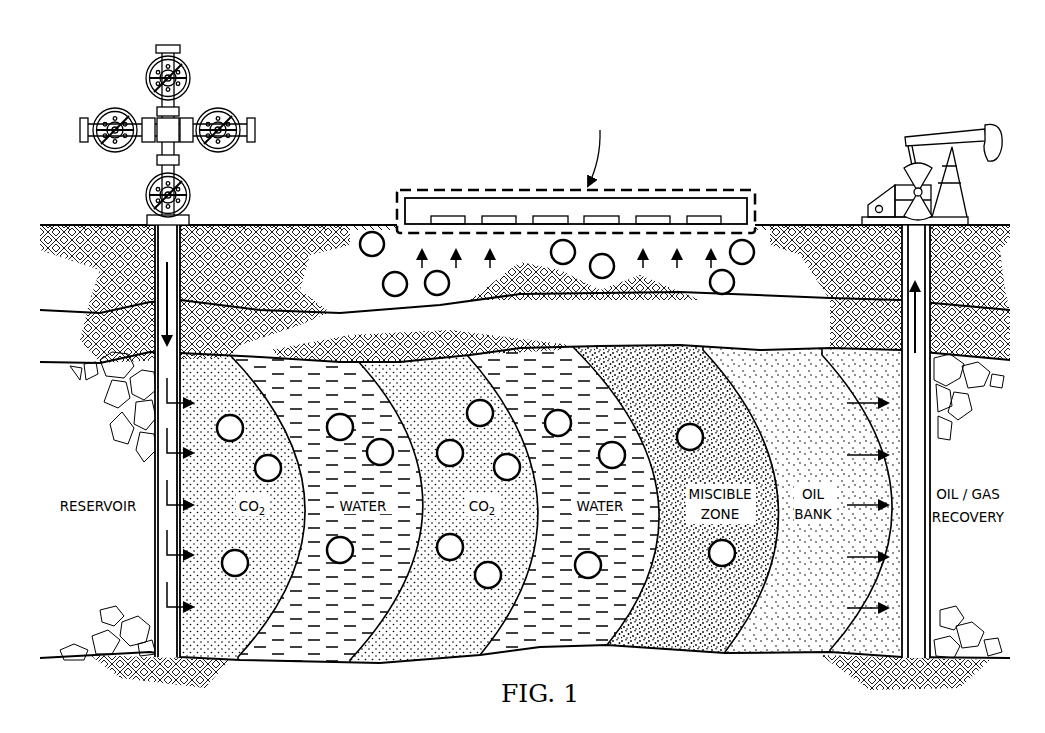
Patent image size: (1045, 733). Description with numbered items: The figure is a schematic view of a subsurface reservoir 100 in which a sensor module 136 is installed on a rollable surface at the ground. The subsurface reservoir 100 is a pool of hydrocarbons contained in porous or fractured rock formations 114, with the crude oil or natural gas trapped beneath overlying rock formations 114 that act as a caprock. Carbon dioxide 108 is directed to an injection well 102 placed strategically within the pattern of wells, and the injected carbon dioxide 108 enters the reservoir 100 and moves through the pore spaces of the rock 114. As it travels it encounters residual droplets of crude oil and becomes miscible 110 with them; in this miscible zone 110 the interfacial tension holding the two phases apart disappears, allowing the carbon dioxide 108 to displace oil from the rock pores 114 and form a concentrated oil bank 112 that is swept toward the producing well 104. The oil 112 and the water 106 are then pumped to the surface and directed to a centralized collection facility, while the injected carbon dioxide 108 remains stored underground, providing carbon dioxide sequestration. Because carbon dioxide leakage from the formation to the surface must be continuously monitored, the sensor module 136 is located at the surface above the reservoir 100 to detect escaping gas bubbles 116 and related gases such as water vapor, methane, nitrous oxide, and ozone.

The subsurface reservoir 100 is at (842, 80).
The injection well 102 is at (112, 104).
The producing well 104 is at (970, 197).
The water 106 is at (317, 659).
The carbon dioxide 108 is at (420, 660).
The miscible zone 110 is at (668, 645).
The oil bank 112 is at (778, 650).
The rock formations 114 is at (621, 334).
The leaked CO2 bubbles 116 is at (383, 282).
The sensor module 136 is at (650, 187).